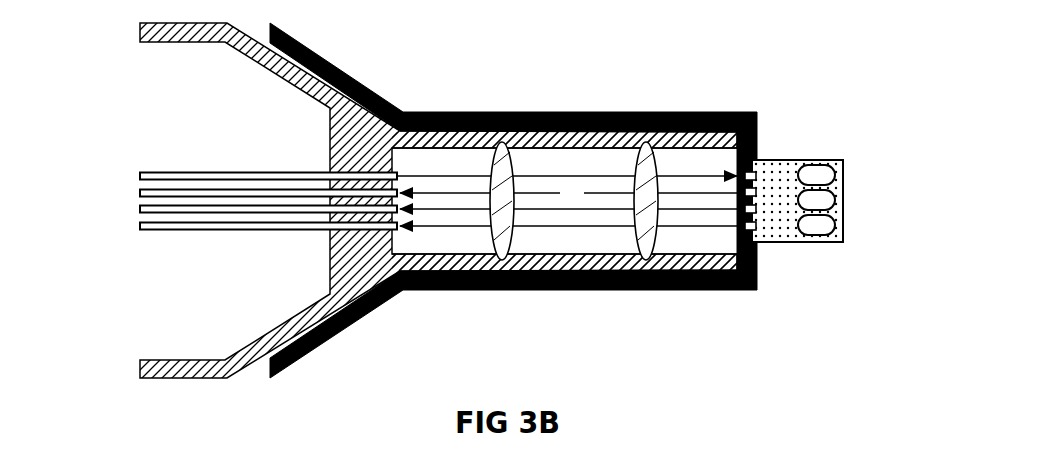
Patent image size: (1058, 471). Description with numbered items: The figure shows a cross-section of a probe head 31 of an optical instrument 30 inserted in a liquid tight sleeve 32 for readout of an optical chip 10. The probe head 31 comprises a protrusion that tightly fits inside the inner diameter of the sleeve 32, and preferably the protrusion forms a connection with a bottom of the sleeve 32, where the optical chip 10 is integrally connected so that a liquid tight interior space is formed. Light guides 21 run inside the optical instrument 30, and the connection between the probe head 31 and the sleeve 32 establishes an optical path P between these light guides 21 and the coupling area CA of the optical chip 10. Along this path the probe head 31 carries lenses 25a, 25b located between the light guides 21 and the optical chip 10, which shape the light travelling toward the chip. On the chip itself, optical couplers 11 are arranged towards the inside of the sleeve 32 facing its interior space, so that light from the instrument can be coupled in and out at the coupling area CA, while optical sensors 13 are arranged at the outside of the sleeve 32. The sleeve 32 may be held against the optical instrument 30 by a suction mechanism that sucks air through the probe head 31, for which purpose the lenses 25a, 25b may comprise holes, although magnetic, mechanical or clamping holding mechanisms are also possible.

The optical instrument 30 is at (100, 96).
The probe head 31 is at (447, 141).
The liquid tight sleeve 32 is at (565, 122).
The light guide 21 is at (225, 238).
The optical path P is at (581, 210).
The lens 25a is at (493, 258).
The lens 25b is at (632, 260).
The coupling area CA is at (732, 200).
The optical chip 10 is at (797, 142).
The optical coupler 11 is at (730, 245).
The optical sensor 13 is at (823, 253).